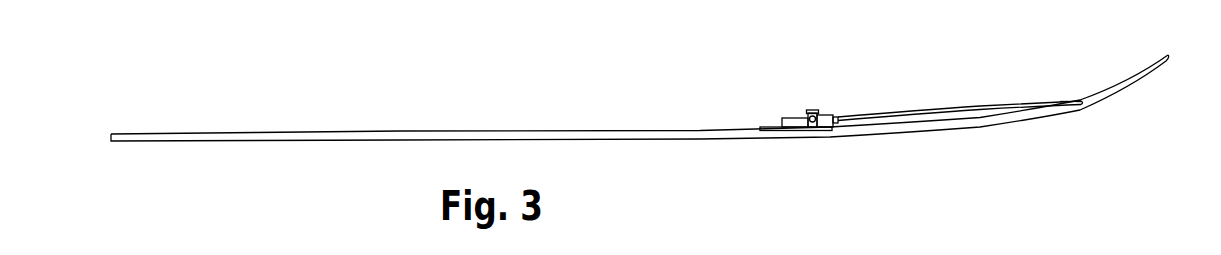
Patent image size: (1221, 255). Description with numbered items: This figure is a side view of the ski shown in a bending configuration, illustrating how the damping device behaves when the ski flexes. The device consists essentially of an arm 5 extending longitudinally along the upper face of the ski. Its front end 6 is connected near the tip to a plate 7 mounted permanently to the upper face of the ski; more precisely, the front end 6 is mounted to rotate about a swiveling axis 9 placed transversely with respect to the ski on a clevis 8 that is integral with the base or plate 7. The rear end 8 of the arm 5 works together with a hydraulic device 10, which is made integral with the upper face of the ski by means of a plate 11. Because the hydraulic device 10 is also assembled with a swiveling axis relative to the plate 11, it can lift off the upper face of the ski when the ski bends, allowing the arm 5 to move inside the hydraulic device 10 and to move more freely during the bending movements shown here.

The arm 5 is at (913, 112).
The front end of arm 6 is at (1063, 102).
The plate 7 is at (1085, 108).
The rear end of arm 8 is at (845, 115).
The swiveling axis 9 is at (1078, 104).
The hydraulic device 10 is at (797, 118).
The plate 11 is at (768, 126).